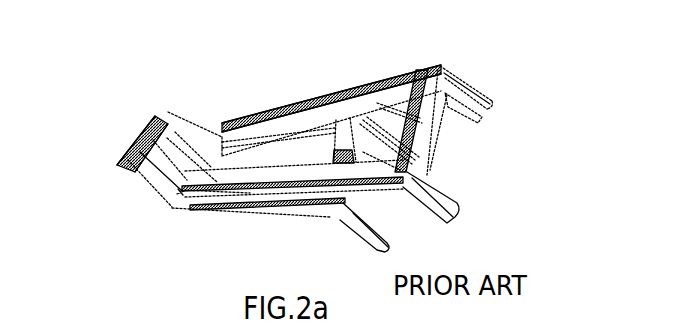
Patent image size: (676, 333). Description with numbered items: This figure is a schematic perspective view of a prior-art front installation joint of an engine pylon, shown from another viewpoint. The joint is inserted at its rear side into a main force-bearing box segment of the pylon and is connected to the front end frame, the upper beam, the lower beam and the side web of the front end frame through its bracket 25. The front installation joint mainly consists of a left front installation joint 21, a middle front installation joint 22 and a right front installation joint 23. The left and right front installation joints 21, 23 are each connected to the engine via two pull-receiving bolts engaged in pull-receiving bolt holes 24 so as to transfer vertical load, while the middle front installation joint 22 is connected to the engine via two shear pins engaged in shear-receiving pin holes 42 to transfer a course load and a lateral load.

The left front installation joint 21 is at (117, 163).
The middle front installation joint 22 is at (137, 143).
The right front installation joint 23 is at (155, 123).
The pull-receiving bolt holes 24 is at (127, 170).
The bracket 25 is at (290, 114).
The shear-receiving pin holes 42 is at (181, 193).